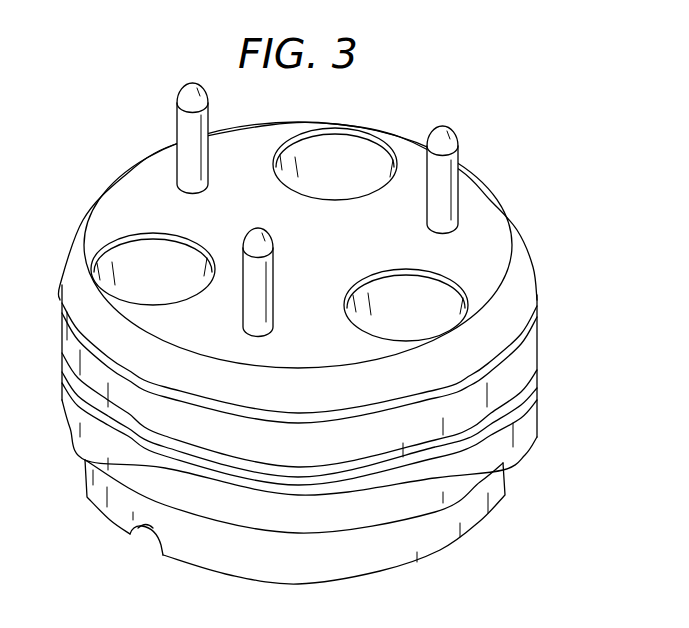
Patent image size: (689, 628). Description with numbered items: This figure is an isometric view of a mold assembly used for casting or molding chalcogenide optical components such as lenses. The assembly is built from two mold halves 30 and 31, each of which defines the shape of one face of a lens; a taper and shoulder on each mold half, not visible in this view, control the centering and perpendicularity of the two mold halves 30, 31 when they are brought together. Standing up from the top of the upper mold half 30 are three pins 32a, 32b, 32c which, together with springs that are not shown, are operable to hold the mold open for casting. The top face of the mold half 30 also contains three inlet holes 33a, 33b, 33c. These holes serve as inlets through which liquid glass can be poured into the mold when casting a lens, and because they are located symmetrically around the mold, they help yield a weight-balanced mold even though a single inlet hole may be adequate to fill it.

The mold half 30 is at (133, 181).
The mold half 31 is at (68, 428).
The pin 32a is at (185, 92).
The pin 32b is at (446, 132).
The pin 32c is at (266, 268).
The inlet hole 33a is at (377, 158).
The inlet hole 33b is at (412, 278).
The inlet hole 33c is at (195, 262).